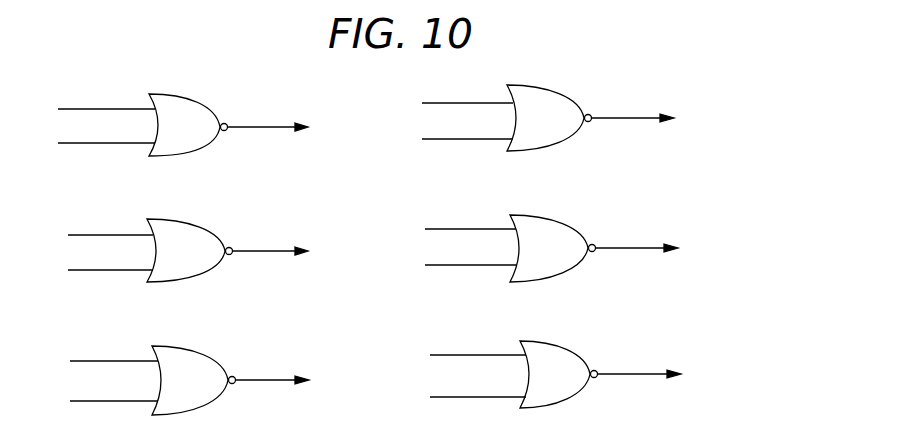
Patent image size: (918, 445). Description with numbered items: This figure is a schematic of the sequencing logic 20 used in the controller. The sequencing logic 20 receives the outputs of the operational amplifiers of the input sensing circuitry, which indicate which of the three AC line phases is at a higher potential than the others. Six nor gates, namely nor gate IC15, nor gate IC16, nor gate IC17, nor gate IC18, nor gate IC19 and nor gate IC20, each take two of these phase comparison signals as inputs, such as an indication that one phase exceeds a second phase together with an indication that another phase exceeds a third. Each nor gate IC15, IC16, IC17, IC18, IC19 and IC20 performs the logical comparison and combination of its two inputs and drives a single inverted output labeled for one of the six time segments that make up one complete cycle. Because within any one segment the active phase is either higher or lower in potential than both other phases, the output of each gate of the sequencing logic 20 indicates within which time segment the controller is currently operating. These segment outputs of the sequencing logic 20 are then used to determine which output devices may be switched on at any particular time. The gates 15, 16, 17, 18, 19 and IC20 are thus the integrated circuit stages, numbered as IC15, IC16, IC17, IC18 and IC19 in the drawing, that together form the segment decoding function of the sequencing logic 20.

The sequencing logic 20 is at (340, 320).
The nor gate IC15 is at (194, 119).
The nor gate IC16 is at (201, 245).
The nor gate IC17 is at (200, 374).
The nor gate IC18 is at (564, 115).
The nor gate IC19 is at (560, 243).
The nor gate IC20 is at (562, 368).
The NOR gate IC15 15 is at (194, 119).
The NOR gate IC16 16 is at (201, 245).
The NOR gate IC17 17 is at (200, 374).
The NOR gate IC18 18 is at (564, 115).
The NOR gate IC19 19 is at (560, 243).